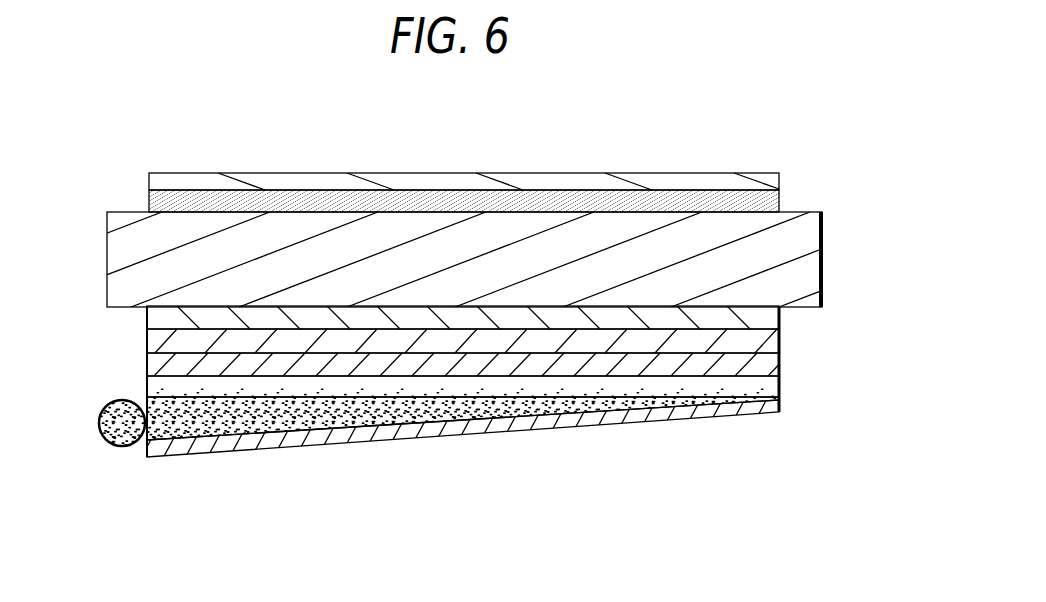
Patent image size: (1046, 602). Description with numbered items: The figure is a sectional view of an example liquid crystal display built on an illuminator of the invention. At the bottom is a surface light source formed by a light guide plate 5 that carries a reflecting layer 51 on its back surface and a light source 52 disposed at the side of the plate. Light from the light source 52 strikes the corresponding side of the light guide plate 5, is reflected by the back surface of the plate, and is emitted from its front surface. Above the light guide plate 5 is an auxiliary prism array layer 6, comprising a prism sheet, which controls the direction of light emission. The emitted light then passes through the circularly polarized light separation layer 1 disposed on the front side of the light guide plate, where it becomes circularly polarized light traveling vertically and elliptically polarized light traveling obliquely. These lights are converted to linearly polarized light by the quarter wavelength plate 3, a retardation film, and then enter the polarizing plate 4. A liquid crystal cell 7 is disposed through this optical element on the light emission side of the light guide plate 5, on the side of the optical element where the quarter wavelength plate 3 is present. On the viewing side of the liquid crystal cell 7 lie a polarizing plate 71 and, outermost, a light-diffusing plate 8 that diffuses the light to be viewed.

The circularly polarized light separation layer 1 is at (780, 368).
The retardation film 3 is at (780, 348).
The polarizing plate 4 is at (780, 320).
The light guide plate 5 is at (362, 432).
The reflecting layer 51 is at (620, 423).
The light source 52 is at (102, 420).
The prism array layer 6 is at (780, 388).
The liquid crystal cell 7 is at (808, 272).
The polarizing plate 71 is at (780, 200).
The light-diffusing plate 8 is at (780, 179).